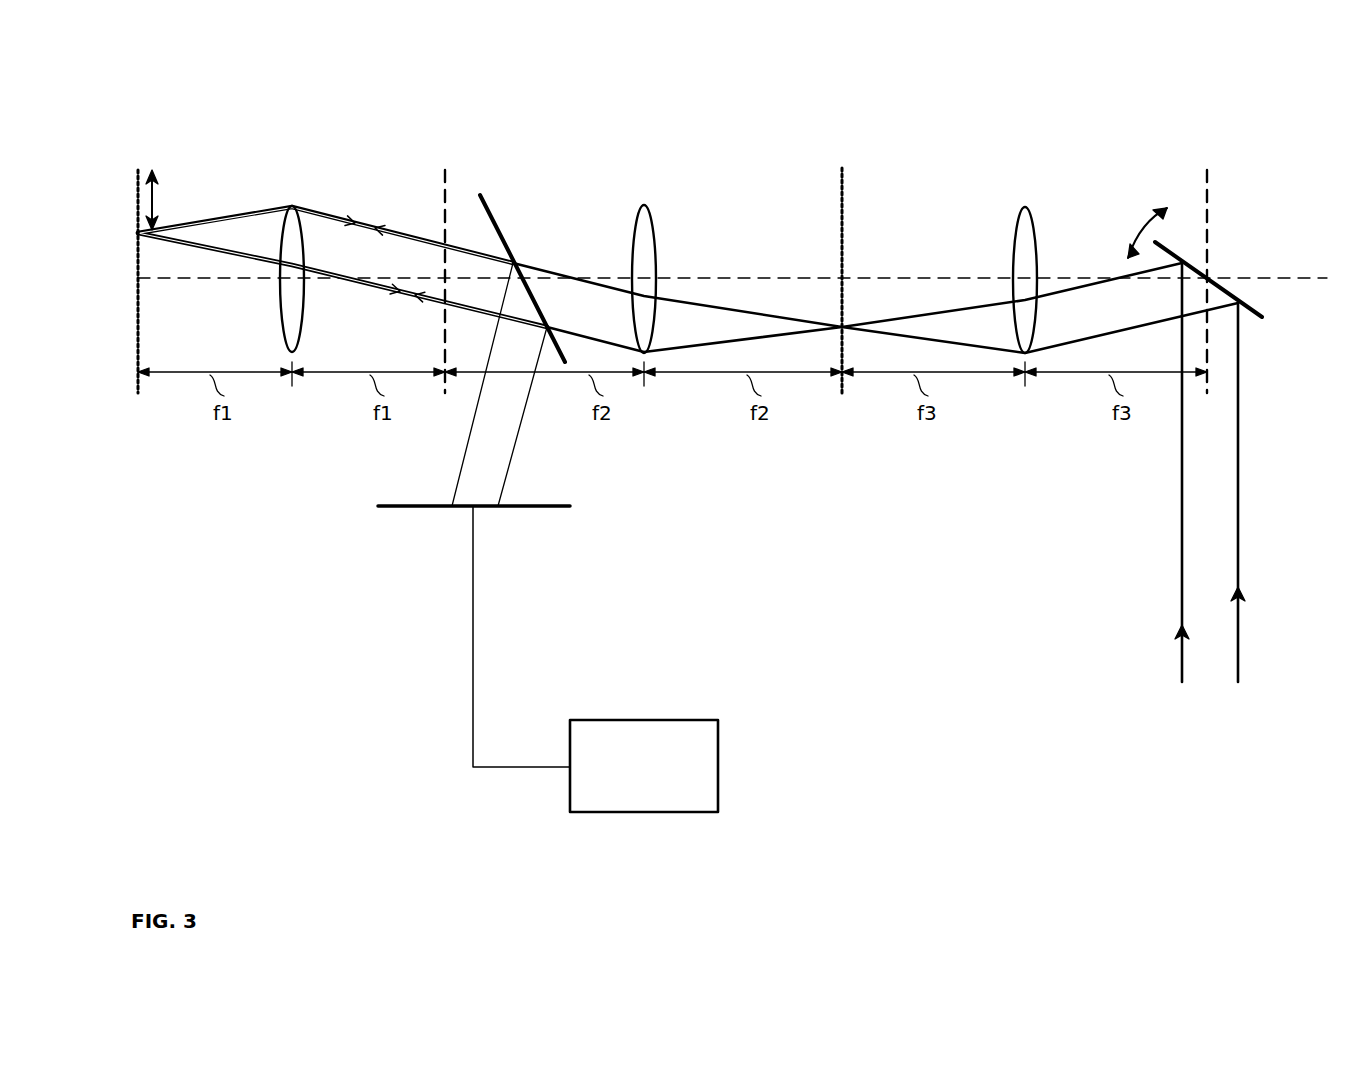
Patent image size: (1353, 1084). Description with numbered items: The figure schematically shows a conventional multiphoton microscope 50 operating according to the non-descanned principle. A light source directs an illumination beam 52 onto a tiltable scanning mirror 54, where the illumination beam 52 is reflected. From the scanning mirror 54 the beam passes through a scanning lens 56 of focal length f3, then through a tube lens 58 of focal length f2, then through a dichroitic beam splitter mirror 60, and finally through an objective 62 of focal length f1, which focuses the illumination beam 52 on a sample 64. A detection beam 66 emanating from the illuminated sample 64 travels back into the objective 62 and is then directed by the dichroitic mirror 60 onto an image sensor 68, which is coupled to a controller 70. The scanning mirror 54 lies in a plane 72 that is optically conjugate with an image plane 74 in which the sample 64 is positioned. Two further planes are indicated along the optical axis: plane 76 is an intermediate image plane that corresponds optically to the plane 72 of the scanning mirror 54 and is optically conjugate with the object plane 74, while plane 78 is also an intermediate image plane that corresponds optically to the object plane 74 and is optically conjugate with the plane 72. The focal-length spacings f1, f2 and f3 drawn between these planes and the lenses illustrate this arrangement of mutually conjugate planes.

The multiphoton microscope 50 is at (1122, 150).
The illumination beam 52 is at (1238, 658).
The scanning mirror 54 is at (1265, 311).
The scanning lens 56 is at (1025, 207).
The tube lens 58 is at (644, 206).
The dichroitic beam splitter mirror 60 is at (503, 236).
The objective 62 is at (292, 206).
The sample 64 is at (136, 255).
The detection beam 66 is at (516, 437).
The image sensor 68 is at (400, 507).
The controller 70 is at (642, 720).
The plane 72 is at (1210, 192).
The image plane 74 is at (136, 340).
The intermediate image plane 76 is at (448, 194).
The intermediate image plane 78 is at (846, 194).